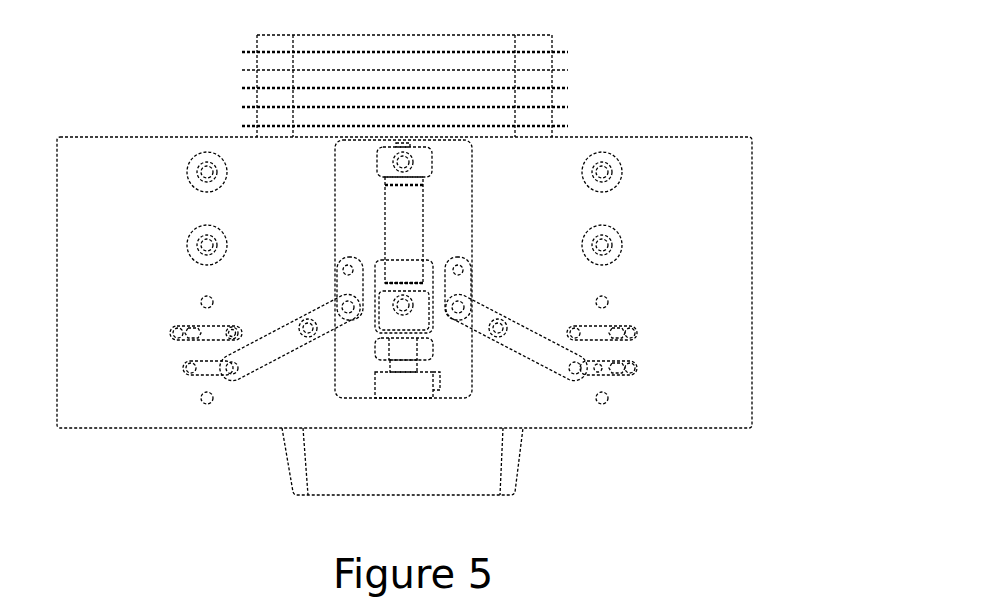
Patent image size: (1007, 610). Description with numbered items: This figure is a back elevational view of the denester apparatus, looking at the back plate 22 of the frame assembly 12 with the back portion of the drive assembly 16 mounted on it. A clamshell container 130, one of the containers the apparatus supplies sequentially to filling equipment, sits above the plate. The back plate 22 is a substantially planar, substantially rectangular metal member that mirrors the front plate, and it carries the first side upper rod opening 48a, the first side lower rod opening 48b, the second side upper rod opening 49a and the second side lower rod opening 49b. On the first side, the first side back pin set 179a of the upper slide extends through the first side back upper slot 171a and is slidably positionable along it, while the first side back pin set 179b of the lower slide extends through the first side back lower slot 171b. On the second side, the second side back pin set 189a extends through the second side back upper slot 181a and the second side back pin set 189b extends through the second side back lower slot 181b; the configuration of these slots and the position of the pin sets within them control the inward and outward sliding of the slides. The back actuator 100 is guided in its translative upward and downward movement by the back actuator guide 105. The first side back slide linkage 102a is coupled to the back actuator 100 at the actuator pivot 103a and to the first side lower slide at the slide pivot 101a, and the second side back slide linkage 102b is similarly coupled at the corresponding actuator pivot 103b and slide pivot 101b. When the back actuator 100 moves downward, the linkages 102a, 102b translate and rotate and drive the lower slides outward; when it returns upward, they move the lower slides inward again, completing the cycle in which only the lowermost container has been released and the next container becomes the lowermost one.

The frame assembly 12 is at (755, 297).
The drive assembly 16 is at (333, 193).
The back plate 22 is at (734, 201).
The first side upper rod opening 48a is at (611, 302).
The first side lower rod opening 48b is at (606, 410).
The second side upper rod opening 49a is at (200, 302).
The second side lower rod opening 49b is at (207, 410).
The back actuator 100 is at (474, 197).
The slide pivot 101a is at (575, 378).
The slide pivot 101b is at (234, 379).
The first side back slide linkage 102a is at (546, 375).
The second side back slide linkage 102b is at (250, 359).
The actuator pivot 103a is at (461, 300).
The pivot 103b is at (346, 297).
The back actuator guide 105 is at (377, 361).
The clamshell container 130 is at (569, 88).
The first side back upper slot 171a is at (582, 320).
The first side back lower slot 171b is at (601, 357).
The first side back pin set 179a is at (622, 325).
The first side back pin set 179b is at (622, 375).
The second side back upper slot 181a is at (169, 338).
The second side back lower slot 181b is at (186, 378).
The second side back pin set 189a is at (218, 320).
The second side back pin set 189b is at (183, 366).